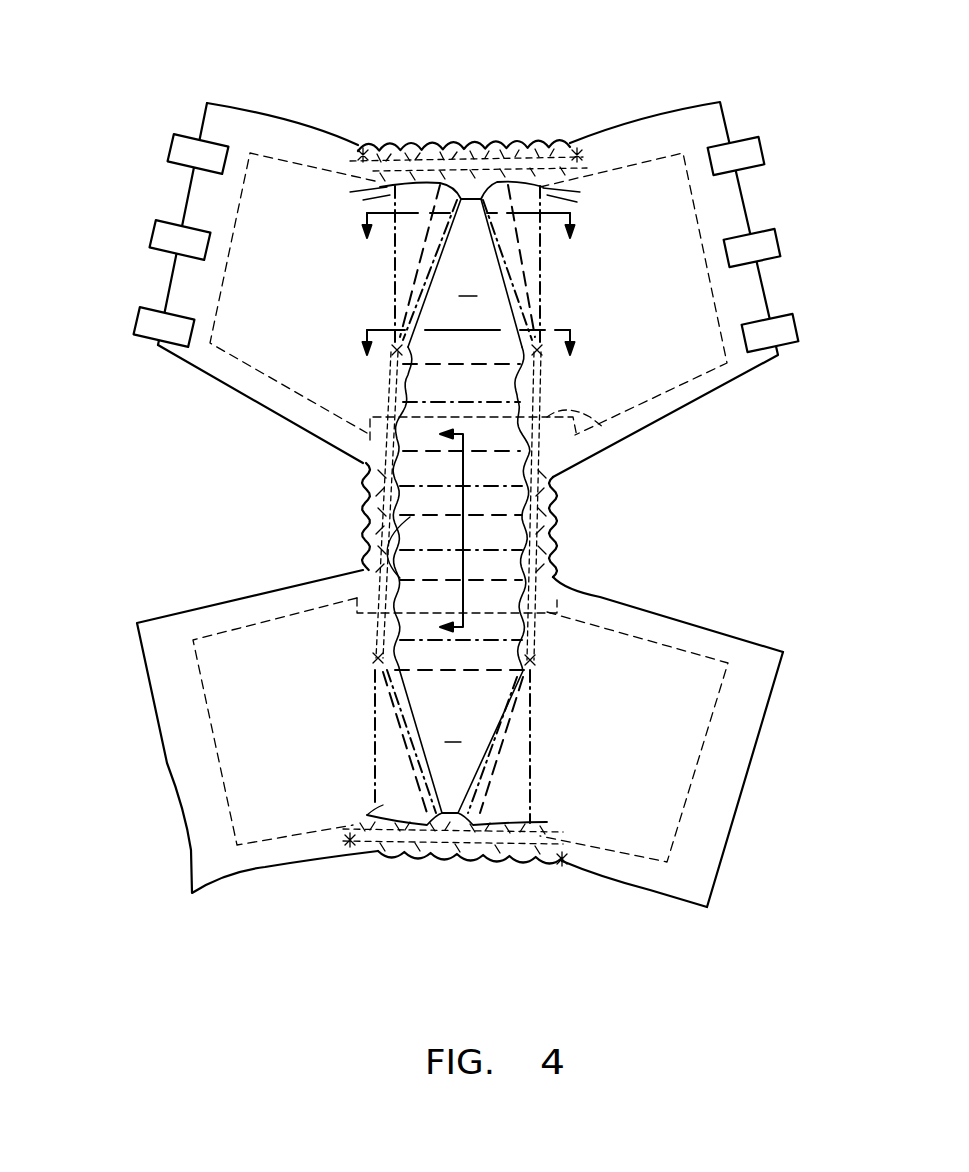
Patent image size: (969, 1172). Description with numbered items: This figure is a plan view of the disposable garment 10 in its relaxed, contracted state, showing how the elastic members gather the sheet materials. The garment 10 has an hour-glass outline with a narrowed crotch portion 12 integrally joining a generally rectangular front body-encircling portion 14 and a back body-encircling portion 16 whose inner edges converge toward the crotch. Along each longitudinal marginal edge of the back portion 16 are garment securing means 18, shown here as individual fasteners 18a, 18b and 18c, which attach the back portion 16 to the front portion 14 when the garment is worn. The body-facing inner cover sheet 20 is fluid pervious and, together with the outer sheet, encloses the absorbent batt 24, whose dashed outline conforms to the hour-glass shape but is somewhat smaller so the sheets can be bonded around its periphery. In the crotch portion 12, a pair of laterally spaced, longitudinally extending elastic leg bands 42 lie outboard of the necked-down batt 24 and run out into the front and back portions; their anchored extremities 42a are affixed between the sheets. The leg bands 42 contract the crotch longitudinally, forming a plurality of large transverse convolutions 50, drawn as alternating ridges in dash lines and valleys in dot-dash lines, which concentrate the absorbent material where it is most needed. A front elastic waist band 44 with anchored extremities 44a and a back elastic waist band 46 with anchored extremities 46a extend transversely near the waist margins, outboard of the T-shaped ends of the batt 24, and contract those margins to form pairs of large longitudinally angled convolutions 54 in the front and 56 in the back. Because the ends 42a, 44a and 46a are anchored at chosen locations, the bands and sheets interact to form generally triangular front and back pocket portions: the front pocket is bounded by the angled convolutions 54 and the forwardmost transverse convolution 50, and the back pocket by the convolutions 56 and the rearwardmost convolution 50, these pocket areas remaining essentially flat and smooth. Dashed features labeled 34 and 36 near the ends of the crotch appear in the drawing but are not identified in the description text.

The disposable garment 10 is at (238, 452).
The crotch portion 12 is at (553, 538).
The front body-encircling portion 14 is at (290, 865).
The back body-encircling portion 16 is at (648, 118).
The garment securing means 18 is at (168, 220).
The first fastening tab 18a is at (185, 140).
The second fastening tab 18b is at (160, 237).
The third fastening tab 18c is at (145, 322).
The inner cover sheet 20 is at (272, 120).
The absorbent batt 24 is at (688, 375).
The front pad end 34 is at (547, 637).
The back pad end 36 is at (603, 427).
The elastic leg bands 42 is at (367, 483).
The anchored extremities of the elastic leg bands 42a is at (395, 350).
The front elastic waist band 44 is at (437, 853).
The anchored extremities of the front elastic waist band 44a is at (350, 850).
The back elastic waist band 46 is at (477, 150).
The anchored extremities of the back elastic waist band 46a is at (356, 140).
The transverse convolutions 50 is at (370, 538).
The front longitudinally angled convolutions 54 is at (405, 752).
The back longitudinally angled convolutions 56 is at (405, 288).